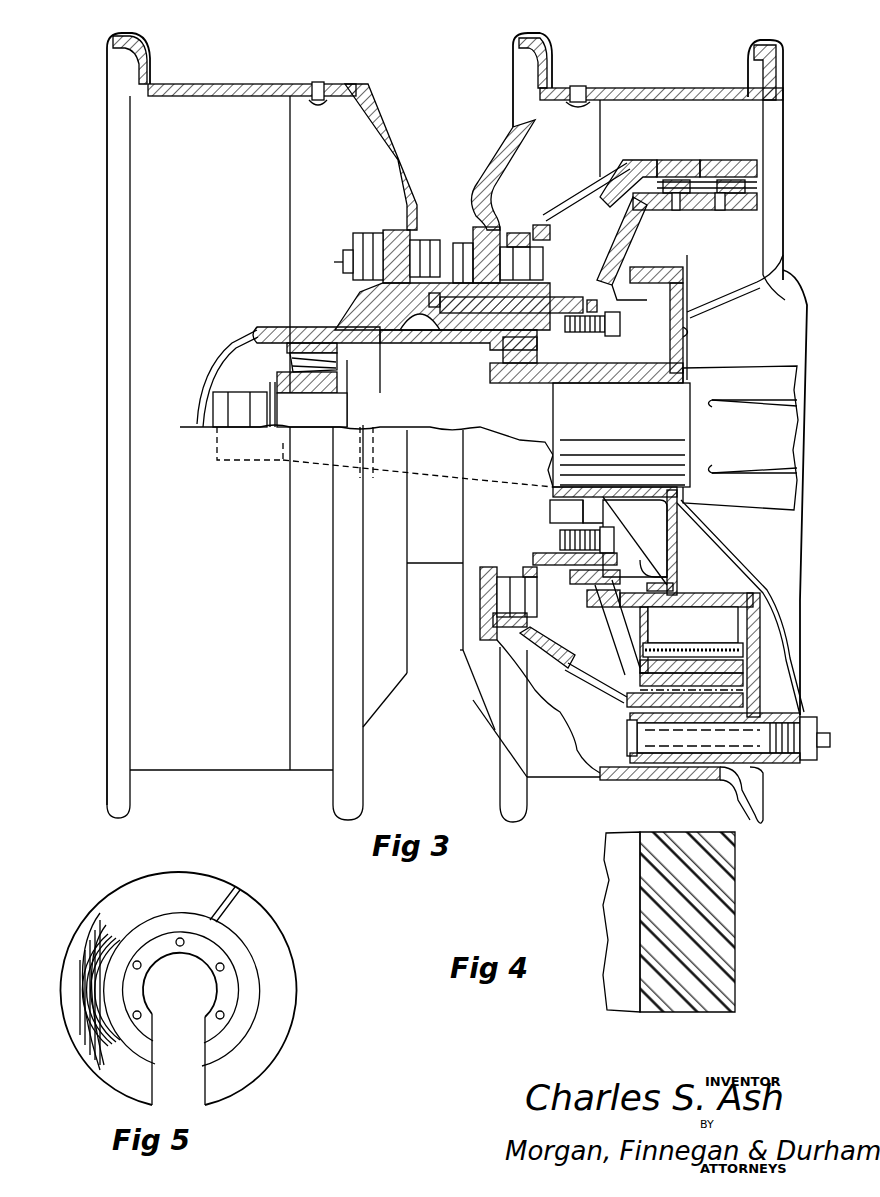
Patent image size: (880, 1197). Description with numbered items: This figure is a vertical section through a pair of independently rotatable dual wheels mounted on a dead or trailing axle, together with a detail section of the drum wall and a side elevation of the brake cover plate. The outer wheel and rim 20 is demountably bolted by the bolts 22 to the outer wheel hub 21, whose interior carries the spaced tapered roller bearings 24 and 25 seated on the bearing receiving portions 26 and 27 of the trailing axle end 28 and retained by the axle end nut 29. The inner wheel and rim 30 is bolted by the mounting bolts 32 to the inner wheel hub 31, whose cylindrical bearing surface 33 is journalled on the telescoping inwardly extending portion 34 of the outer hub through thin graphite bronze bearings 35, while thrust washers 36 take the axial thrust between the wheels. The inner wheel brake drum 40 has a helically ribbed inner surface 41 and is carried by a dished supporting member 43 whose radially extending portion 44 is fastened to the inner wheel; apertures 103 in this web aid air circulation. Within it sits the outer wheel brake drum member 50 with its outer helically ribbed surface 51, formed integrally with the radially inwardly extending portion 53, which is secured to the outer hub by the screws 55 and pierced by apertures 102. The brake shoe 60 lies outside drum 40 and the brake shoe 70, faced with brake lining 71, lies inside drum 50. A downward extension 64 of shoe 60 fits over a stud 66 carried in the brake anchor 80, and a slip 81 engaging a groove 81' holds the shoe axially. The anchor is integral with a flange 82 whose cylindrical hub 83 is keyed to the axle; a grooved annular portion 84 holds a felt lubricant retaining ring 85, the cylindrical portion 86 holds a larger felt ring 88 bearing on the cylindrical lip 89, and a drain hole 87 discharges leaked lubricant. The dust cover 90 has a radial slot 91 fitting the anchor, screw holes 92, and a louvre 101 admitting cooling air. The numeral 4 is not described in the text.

In FIG. 3, the outer wheel and rim 20 is at (290, 178).
In FIG. 3, the outer wheel hub 21 is at (313, 326).
In FIG. 3, the bolts 22 is at (343, 262).
In FIG. 3, the tapered roller bearing 24 is at (343, 367).
In FIG. 3, the tapered roller bearing 25 is at (502, 360).
In FIG. 3, the bearing receiving portion 26 is at (320, 407).
In FIG. 3, the bearing receiving portion 27 is at (540, 414).
In FIG. 3, the trailing axle end 28 is at (413, 393).
In FIG. 3, the axle end nut 29 is at (243, 393).
In FIG. 3, the inner wheel and rim 30 is at (487, 190).
In FIG. 3, the inner wheel hub 31 is at (517, 238).
In FIG. 3, the mounting bolts 32 is at (456, 250).
In FIG. 3, the cylindrical bearing surface 33 is at (437, 304).
In FIG. 3, the inwardly extending portion 34 is at (472, 318).
In FIG. 3, the graphite bronze bearings 35 is at (445, 322).
In FIG. 3, the thrust washers 36 is at (410, 322).
In FIG. 3, the brake drum 40 is at (724, 160).
In FIG. 3, the helically ribbed inner surface 41 is at (688, 165).
In FIG. 3, the dished supporting member 43 is at (626, 170).
In FIG. 3, the radially extending portion 44 is at (549, 233).
In FIG. 3, the brake band 4 is at (748, 695).
In FIG. 3, the brake drum member 50 is at (693, 202).
In FIG. 4, the brake drum member 50 is at (738, 897).
In FIG. 3, the outer helically ribbed surface 51 is at (733, 212).
In FIG. 4, the outer helically ribbed surface 51 is at (700, 983).
In FIG. 3, the radially inwardly extending portion 53 is at (622, 224).
In FIG. 4, the radially inwardly extending portion 53 is at (617, 893).
In FIG. 3, the screws 55 is at (620, 323).
In FIG. 3, the brake shoe 60 is at (758, 708).
In FIG. 3, the downward extension 64 is at (720, 768).
In FIG. 3, the stud 66 is at (753, 745).
In FIG. 3, the brake shoe 70 is at (712, 640).
In FIG. 3, the brake lining 71 is at (740, 651).
In FIG. 3, the brake anchor 80 is at (761, 663).
In FIG. 3, the slip 81 is at (715, 779).
In FIG. 3, the groove 81' is at (609, 732).
In FIG. 3, the flange 82 is at (686, 295).
In FIG. 3, the cylindrical hub 83 is at (627, 497).
In FIG. 3, the grooved annular portion 84 is at (602, 520).
In FIG. 3, the felt lubricant retaining ring 85 is at (597, 517).
In FIG. 3, the cylindrical portion 86 is at (640, 268).
In FIG. 3, the drain hole 87 is at (658, 587).
In FIG. 3, the felt lubricant retaining ring 88 is at (622, 590).
In FIG. 3, the cylindrical lip 89 is at (648, 564).
In FIG. 3, the dust cover 90 is at (766, 253).
In FIG. 5, the dust cover 90 is at (284, 949).
In FIG. 3, the radial slot 91 is at (782, 566).
In FIG. 5, the radial slot 91 is at (183, 1070).
In FIG. 5, the holes 92 is at (218, 1012).
In FIG. 5, the louvre 101 is at (72, 1030).
In FIG. 3, the apertures 102 is at (628, 243).
In FIG. 3, the apertures 103 is at (585, 198).